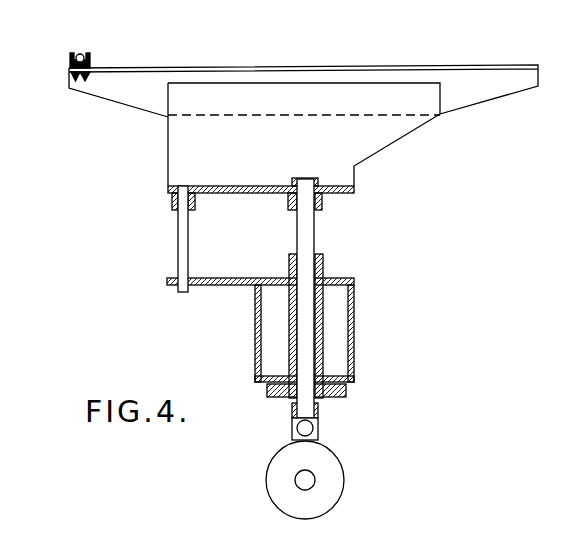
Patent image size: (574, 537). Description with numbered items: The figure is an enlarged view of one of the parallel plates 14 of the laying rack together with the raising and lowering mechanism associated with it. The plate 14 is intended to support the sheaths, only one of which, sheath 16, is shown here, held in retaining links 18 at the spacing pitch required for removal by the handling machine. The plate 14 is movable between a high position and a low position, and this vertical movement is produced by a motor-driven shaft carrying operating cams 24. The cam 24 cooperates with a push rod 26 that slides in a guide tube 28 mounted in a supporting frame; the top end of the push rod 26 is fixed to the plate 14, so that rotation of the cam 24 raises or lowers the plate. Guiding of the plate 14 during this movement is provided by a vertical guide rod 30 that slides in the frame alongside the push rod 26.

The plate 14 is at (490, 88).
The sheath 16 is at (78, 53).
The retaining links 18 is at (88, 63).
The operating cam 24 is at (318, 460).
The push rod 26 is at (302, 232).
The guide tube 28 is at (322, 312).
The vertical guide rod 30 is at (180, 242).